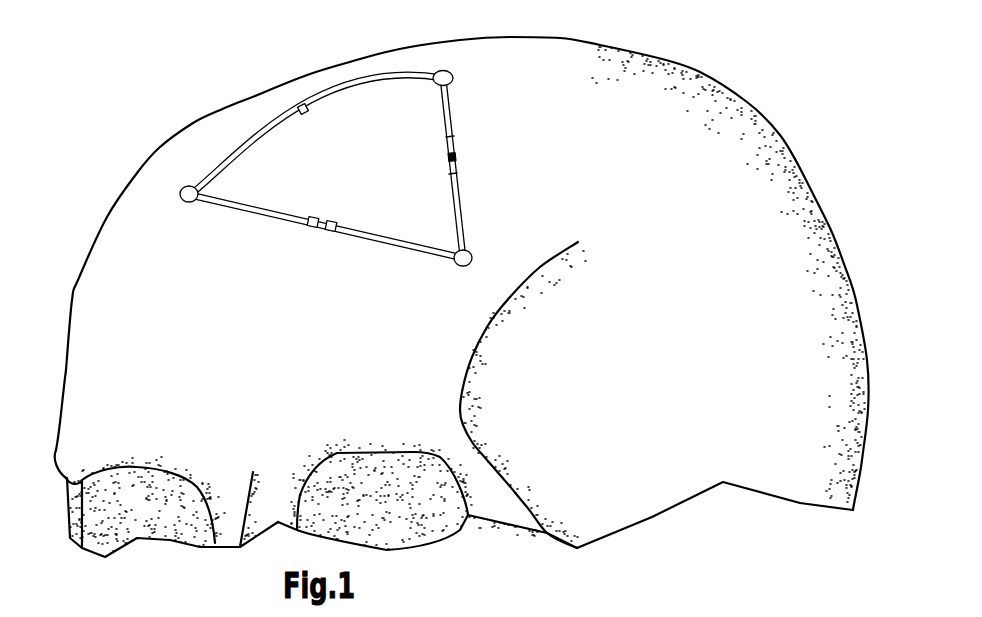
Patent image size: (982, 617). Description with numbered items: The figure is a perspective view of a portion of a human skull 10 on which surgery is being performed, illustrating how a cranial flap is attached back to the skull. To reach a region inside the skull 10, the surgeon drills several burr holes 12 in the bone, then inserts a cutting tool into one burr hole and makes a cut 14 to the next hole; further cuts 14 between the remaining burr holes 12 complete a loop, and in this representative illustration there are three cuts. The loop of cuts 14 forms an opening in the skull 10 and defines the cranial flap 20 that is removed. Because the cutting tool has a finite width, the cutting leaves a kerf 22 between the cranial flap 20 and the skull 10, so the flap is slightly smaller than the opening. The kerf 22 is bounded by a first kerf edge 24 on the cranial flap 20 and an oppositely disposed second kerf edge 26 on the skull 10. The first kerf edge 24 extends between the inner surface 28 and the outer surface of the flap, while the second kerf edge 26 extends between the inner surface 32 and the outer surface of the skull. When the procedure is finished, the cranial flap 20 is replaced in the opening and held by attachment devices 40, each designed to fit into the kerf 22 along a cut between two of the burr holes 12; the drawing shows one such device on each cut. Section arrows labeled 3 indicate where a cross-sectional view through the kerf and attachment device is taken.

The skull 10 is at (104, 191).
The burr holes 12 is at (185, 196).
The cuts 14 is at (350, 88).
The cranial flap 20 is at (372, 160).
The kerf 22 is at (220, 157).
The first kerf edge 24 is at (393, 245).
The second kerf edge 26 is at (407, 247).
The inner surface 28 is at (272, 157).
The inner surface 32 is at (462, 102).
The attachment device 40 is at (305, 110).
The section line 3 is at (314, 214).